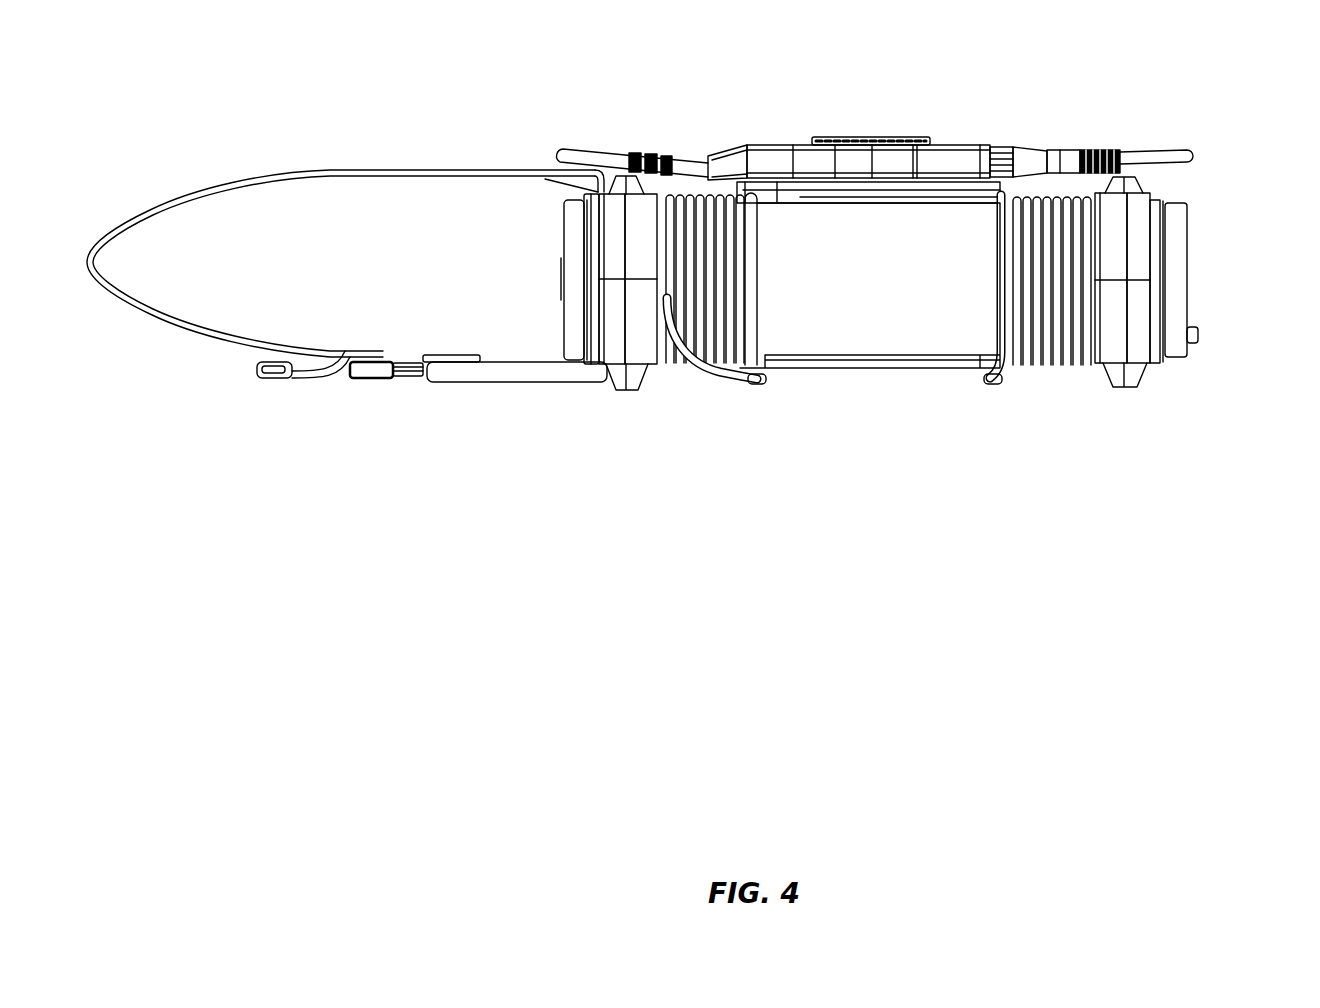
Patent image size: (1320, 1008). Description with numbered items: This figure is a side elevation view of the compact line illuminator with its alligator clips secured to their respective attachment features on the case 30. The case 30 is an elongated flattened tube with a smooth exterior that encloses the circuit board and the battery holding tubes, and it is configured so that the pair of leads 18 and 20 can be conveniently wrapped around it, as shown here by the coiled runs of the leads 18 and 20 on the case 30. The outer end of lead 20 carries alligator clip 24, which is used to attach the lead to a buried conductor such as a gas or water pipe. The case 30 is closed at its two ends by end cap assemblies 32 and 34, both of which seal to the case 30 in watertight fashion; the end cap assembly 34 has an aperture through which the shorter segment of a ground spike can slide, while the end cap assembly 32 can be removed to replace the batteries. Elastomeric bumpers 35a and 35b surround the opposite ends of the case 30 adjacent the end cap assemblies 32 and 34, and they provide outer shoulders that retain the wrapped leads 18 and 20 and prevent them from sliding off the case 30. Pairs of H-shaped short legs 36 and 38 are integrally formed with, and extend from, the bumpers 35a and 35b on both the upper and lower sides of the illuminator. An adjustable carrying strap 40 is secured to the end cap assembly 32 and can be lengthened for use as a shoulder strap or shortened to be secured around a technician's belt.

The lead 18 is at (590, 152).
The lead 20 is at (1175, 150).
The alligator clip 24 is at (788, 143).
The case 30 is at (876, 336).
The end cap assembly 32 is at (573, 293).
The end cap assembly 34 is at (1180, 293).
The elastomeric bumper 35a is at (612, 252).
The elastomeric bumper 35b is at (1140, 252).
The H-shaped short legs 36 is at (598, 267).
The H-shaped short legs 38 is at (1192, 267).
The adjustable carrying strap 40 is at (375, 168).